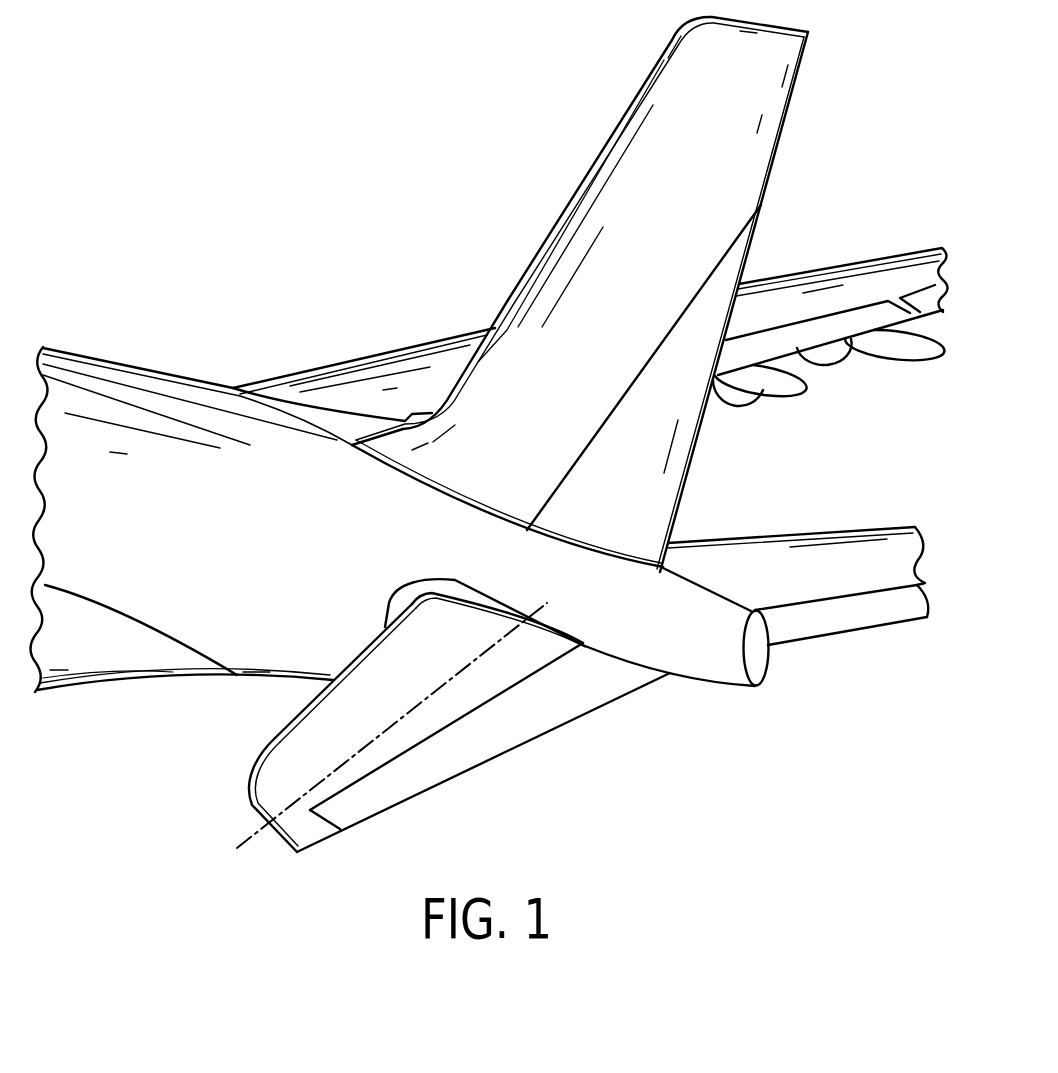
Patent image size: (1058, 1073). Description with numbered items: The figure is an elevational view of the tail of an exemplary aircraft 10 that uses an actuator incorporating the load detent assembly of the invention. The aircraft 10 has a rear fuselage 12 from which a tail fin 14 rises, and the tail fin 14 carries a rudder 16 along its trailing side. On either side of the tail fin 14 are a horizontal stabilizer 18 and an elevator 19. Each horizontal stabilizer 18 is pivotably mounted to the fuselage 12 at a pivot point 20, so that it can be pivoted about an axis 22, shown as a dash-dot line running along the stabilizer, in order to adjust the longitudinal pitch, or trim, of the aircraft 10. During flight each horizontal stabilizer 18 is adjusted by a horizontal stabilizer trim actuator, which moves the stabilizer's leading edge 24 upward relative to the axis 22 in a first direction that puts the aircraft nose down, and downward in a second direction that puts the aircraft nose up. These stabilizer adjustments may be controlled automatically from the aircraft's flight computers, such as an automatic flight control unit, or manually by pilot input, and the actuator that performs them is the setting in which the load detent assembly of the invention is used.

The aircraft 10 is at (236, 216).
The rear fuselage 12 is at (96, 413).
The tail fin 14 is at (761, 92).
The rudder 16 is at (680, 453).
The horizontal stabilizer 18 is at (878, 550).
The elevator 19 is at (867, 613).
The pivot point 20 is at (557, 622).
The axis 22 is at (250, 838).
The leading edge 24 is at (277, 735).